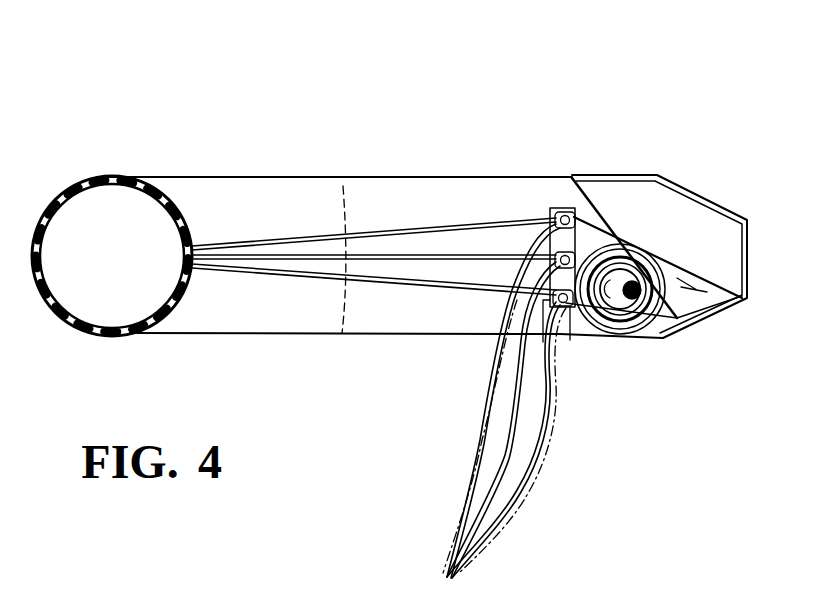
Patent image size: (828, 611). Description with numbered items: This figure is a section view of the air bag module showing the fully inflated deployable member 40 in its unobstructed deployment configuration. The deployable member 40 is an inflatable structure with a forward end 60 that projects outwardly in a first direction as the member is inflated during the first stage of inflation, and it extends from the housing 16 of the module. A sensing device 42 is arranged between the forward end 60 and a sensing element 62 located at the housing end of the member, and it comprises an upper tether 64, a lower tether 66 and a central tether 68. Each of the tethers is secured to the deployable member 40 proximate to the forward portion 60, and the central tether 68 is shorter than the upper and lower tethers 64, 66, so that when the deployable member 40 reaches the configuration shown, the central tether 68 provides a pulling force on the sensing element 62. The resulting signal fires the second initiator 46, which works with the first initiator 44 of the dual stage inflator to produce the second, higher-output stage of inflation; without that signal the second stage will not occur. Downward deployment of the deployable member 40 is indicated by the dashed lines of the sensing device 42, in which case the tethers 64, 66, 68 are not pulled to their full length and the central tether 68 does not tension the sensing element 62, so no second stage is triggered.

The housing 16 is at (640, 339).
The deployable member 40 is at (440, 168).
The sensing device 42 is at (513, 206).
The first initiator 44 is at (623, 272).
The second initiator 46 is at (655, 255).
The forward end 60 is at (92, 180).
The sensing element 62 is at (568, 338).
The upper tether 64 is at (407, 227).
The lower tether 66 is at (372, 282).
The central tether 68 is at (322, 260).